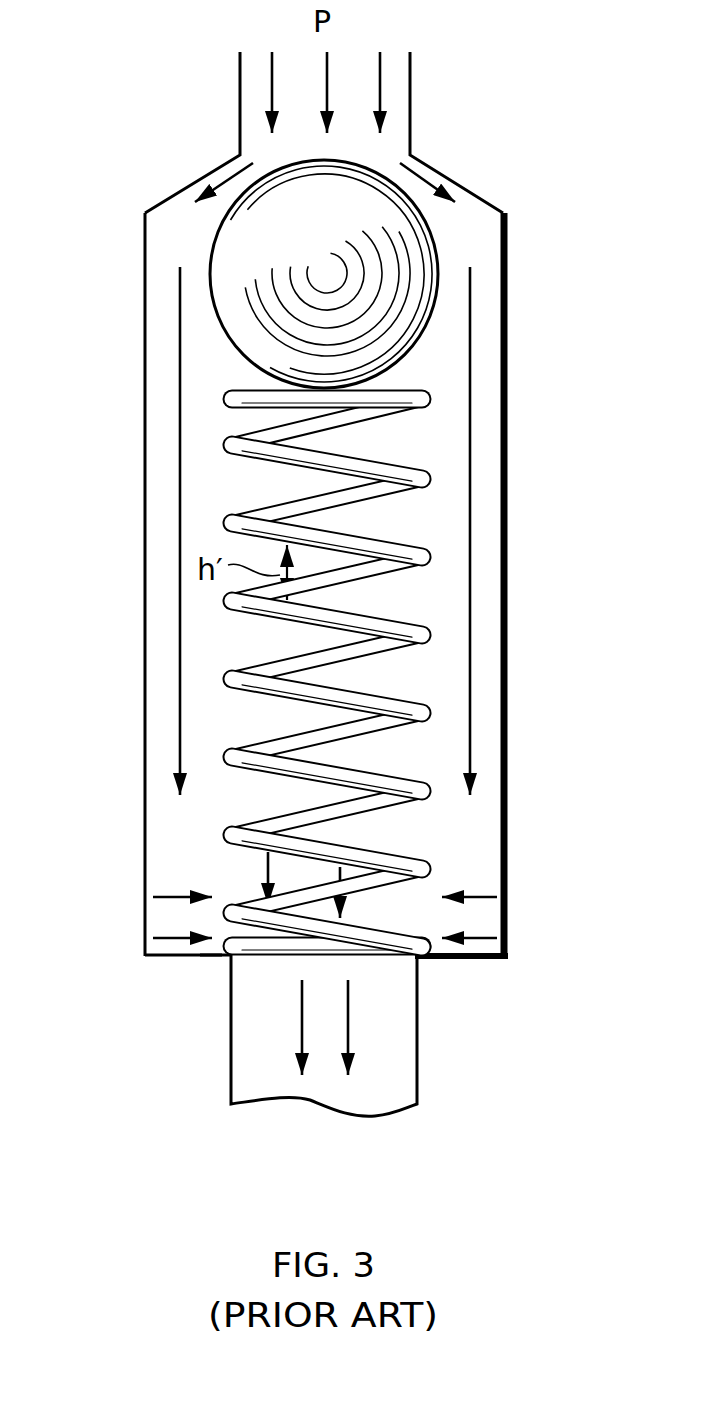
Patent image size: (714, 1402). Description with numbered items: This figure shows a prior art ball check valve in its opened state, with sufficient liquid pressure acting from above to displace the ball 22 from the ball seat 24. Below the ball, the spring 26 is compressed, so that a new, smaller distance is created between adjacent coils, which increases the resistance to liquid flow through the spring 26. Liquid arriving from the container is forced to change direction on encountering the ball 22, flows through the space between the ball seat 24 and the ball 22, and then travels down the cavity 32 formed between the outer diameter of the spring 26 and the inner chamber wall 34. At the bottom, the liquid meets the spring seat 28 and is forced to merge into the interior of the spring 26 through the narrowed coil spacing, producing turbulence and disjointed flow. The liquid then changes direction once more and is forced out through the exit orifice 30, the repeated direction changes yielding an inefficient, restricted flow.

The ball 22 is at (437, 288).
The ball seat 24 is at (427, 175).
The spring 26 is at (425, 483).
The spring seat 28 is at (202, 946).
The exit orifice 30 is at (323, 1083).
The cavity 32 is at (160, 560).
The inner chamber wall 34 is at (142, 718).